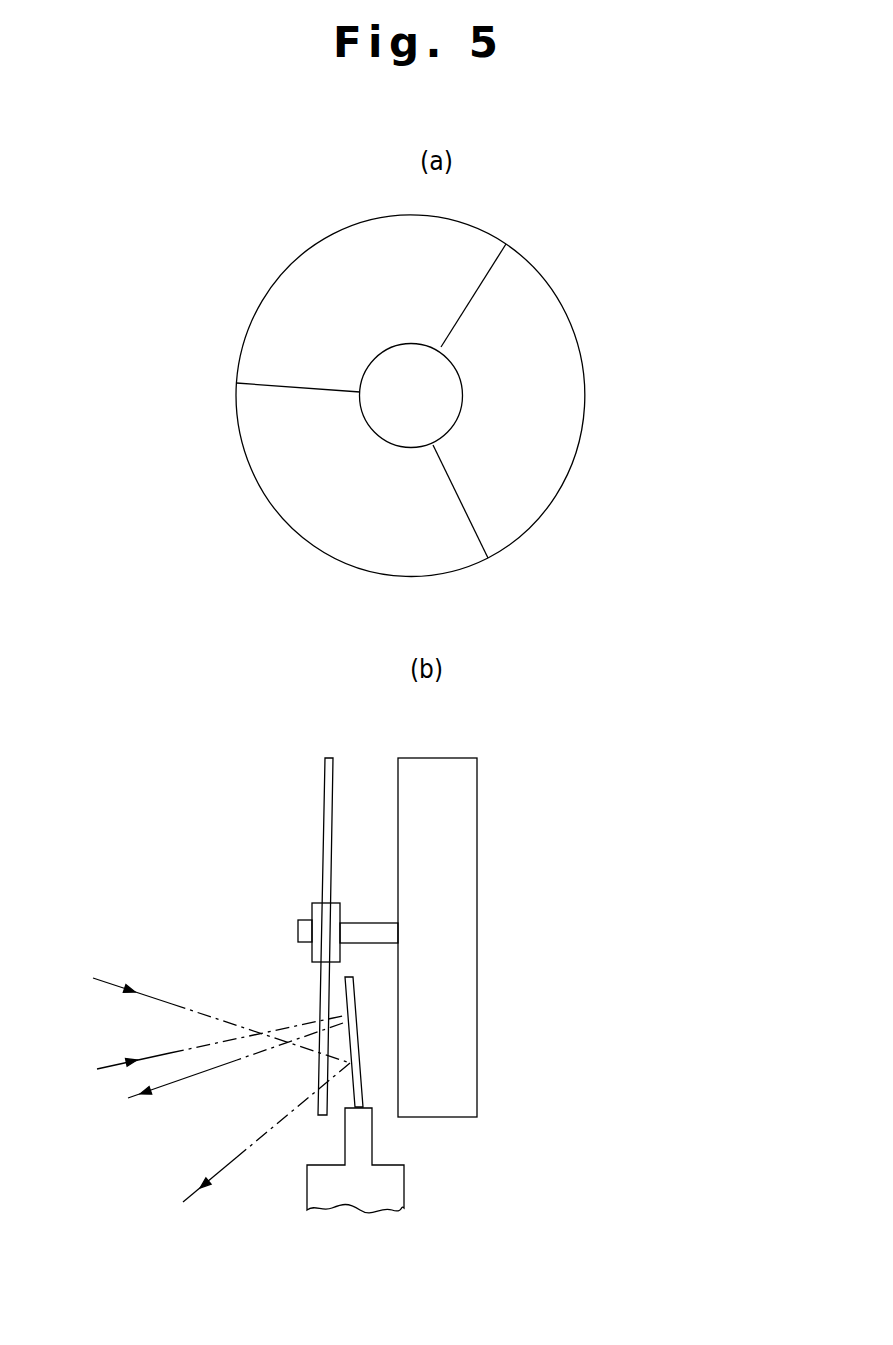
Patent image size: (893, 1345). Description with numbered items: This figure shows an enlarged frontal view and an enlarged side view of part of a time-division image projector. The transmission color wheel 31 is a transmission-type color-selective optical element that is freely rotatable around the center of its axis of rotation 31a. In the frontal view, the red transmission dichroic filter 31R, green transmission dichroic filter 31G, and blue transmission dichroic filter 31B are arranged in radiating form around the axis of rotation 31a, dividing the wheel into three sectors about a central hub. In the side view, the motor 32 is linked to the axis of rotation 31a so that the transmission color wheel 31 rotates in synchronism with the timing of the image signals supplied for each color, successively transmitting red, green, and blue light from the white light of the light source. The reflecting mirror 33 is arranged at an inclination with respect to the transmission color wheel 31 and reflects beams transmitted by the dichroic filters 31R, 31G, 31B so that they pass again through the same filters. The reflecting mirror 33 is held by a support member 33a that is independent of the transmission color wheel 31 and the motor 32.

The transmission color wheel 31 is at (550, 332).
The green transmission dichroic filter 31G is at (297, 317).
The red transmission dichroic filter 31R is at (547, 458).
The blue transmission dichroic filter 31B is at (335, 518).
The axis of rotation 31a is at (360, 932).
The motor 32 is at (462, 905).
The reflecting mirror 33 is at (357, 1077).
The support member 33a is at (405, 1190).